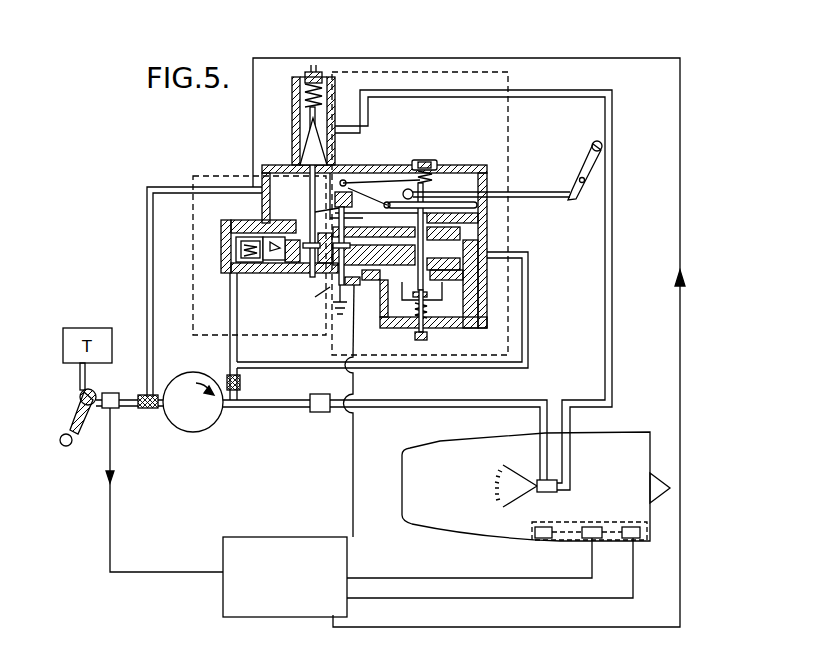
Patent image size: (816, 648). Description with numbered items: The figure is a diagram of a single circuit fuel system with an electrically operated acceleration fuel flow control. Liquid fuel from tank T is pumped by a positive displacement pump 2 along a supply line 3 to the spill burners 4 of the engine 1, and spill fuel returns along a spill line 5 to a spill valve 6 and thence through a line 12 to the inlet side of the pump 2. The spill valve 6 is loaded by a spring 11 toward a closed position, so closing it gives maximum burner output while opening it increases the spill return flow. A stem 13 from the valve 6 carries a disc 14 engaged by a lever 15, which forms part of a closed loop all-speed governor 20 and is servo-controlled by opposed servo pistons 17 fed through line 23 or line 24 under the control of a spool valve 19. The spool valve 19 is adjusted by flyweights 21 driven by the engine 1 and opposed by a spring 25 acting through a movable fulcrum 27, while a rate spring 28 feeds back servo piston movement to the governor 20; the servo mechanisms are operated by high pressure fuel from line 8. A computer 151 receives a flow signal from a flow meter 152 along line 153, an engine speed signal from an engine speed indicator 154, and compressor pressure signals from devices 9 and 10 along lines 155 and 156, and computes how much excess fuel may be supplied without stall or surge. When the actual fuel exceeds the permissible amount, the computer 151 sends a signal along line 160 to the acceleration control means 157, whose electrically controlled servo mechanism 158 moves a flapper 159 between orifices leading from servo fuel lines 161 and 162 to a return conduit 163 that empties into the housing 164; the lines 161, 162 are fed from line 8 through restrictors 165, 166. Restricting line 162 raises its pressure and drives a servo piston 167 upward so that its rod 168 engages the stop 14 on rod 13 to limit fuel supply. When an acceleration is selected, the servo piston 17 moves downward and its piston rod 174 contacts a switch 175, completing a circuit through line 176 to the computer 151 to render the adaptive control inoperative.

The engine 1 is at (447, 450).
The positive displacement pump 2 is at (207, 423).
The supply line 3 is at (289, 410).
The spill burners 4 is at (540, 482).
The spill line 5 is at (612, 309).
The spill valve 6 is at (280, 83).
The high pressure fuel line 8 is at (230, 307).
The compressor delivery pressure sensing device 9 is at (592, 527).
The pressure sensing device 10 is at (633, 527).
The spring 11 is at (300, 90).
The line 12 is at (147, 229).
The stem 13 is at (312, 145).
The disc 14 is at (315, 208).
The lever 15 is at (349, 185).
The servo pistons 17 is at (340, 262).
The spool valve 19 is at (487, 216).
The closed loop all-speed governor 20 is at (519, 124).
The flyweights 21 is at (440, 300).
The line 23 is at (350, 285).
The line 24 is at (397, 203).
The spring 25 is at (424, 162).
The movable fulcrum 27 is at (486, 187).
The rate spring 28 is at (335, 197).
The computer 151 is at (293, 577).
The flow meter 152 is at (118, 409).
The line 153 is at (112, 530).
The engine speed indicator 154 is at (535, 532).
The line 155 is at (437, 578).
The line 156 is at (471, 601).
The acceleration control means 157 is at (186, 180).
The electrically controlled servo mechanism 158 is at (240, 250).
The flapper 159 is at (258, 262).
The line 160 is at (253, 115).
The high pressure servo fuel line 161 is at (277, 240).
The high pressure servo fuel line 162 is at (283, 270).
The return conduit 163 is at (285, 240).
The housing 164 is at (280, 168).
The restrictor 165 is at (230, 246).
The restrictor 166 is at (243, 272).
The servo piston 167 is at (308, 262).
The rod 168 is at (318, 214).
The piston rod 174 is at (315, 297).
The switch 175 is at (355, 312).
The line 176 is at (354, 470).